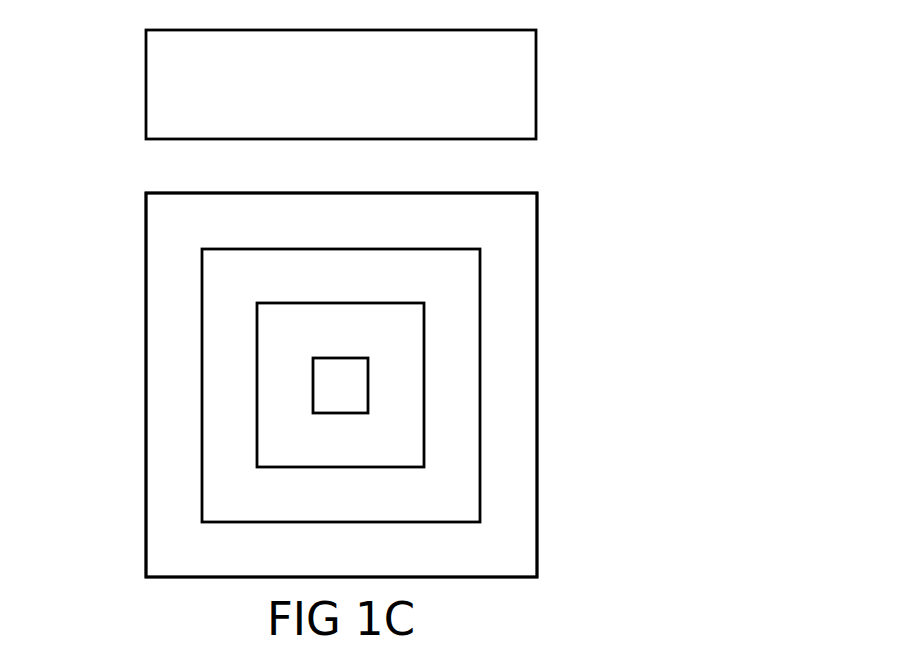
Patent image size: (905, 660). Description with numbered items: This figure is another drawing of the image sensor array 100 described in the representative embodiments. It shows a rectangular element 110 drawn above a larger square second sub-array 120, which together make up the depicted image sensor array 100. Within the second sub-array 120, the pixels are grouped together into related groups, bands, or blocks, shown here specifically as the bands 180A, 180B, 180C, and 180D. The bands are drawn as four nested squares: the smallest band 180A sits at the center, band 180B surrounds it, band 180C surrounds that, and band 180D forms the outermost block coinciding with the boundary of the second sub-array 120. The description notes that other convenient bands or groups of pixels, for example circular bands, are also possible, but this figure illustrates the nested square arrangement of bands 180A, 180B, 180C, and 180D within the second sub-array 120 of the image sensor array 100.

The image sensor array 100 is at (97, 545).
The first substrate 110 is at (537, 76).
The second sub-array 120 is at (537, 252).
The band 180A is at (368, 408).
The band 180B is at (412, 460).
The band 180C is at (468, 513).
The band 180D is at (520, 564).